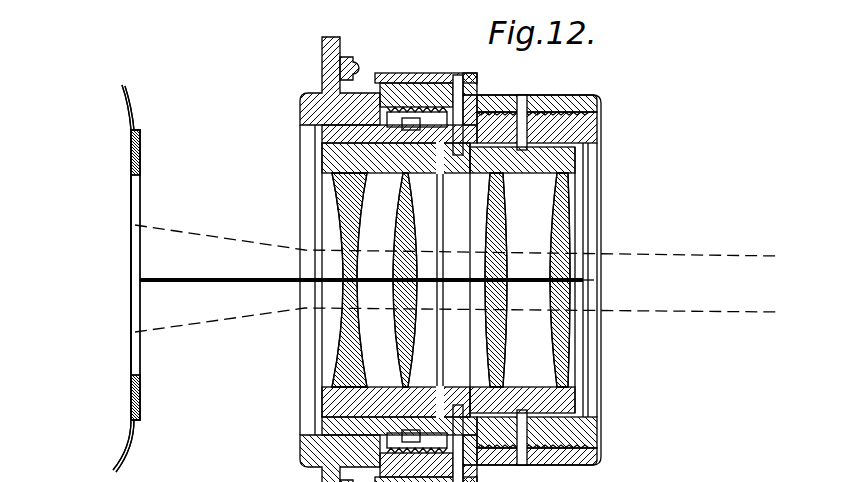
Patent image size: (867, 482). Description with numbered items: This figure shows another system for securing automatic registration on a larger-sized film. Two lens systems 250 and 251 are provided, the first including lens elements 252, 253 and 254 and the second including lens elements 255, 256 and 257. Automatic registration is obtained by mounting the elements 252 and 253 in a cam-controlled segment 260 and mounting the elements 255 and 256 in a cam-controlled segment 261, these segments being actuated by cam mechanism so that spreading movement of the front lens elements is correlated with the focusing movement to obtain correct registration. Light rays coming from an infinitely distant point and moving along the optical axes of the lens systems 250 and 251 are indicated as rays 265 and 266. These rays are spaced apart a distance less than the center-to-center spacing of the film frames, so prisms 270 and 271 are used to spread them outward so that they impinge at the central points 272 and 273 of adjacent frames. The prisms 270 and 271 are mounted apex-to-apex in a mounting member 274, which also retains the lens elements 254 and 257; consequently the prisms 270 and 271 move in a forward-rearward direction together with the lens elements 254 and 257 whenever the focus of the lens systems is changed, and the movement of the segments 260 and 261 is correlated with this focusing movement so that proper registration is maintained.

The lens system 250 is at (583, 241).
The lens system 251 is at (590, 343).
The lens element 252 is at (568, 211).
The lens element 253 is at (500, 203).
The lens element 254 is at (402, 222).
The lens element 255 is at (566, 360).
The lens element 256 is at (499, 372).
The lens element 257 is at (400, 353).
The cam-controlled segment 260 is at (570, 160).
The cam-controlled segment 261 is at (570, 438).
The light ray 265 is at (732, 256).
The light ray 266 is at (722, 312).
The prism 270 is at (343, 203).
The prism 271 is at (338, 350).
The central point of frame 272 is at (135, 225).
The central point of adjacent frame 273 is at (134, 332).
The mounting member 274 is at (310, 157).